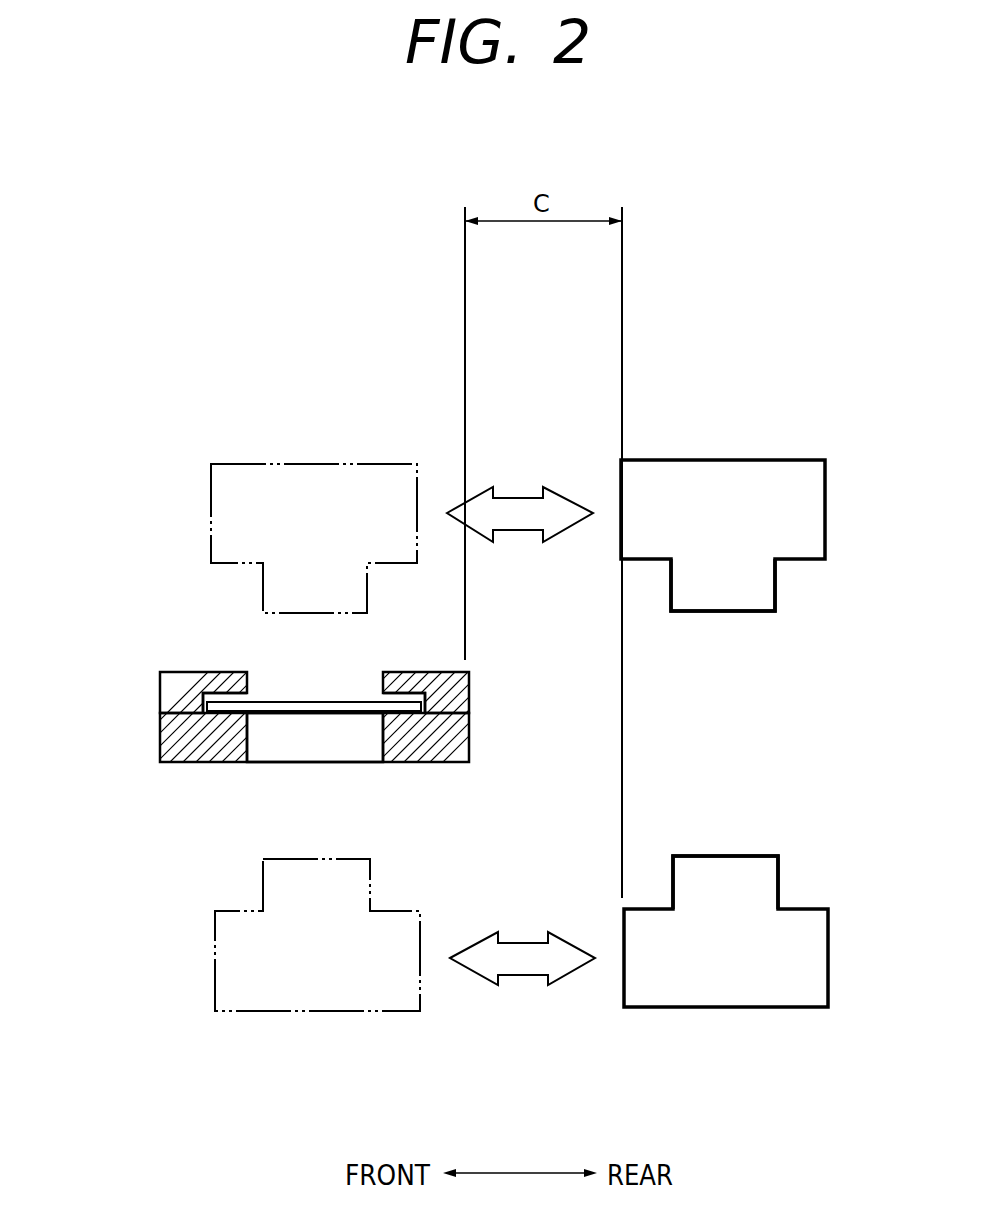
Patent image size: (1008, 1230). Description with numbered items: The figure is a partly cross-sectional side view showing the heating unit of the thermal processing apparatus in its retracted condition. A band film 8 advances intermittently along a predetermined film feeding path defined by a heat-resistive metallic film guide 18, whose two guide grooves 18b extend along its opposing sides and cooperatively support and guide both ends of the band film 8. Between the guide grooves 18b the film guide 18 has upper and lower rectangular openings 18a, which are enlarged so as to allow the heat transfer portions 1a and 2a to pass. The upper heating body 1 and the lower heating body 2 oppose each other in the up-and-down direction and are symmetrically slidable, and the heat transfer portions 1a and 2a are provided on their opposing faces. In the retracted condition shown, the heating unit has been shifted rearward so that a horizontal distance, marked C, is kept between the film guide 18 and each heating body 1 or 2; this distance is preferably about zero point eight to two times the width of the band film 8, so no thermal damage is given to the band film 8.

The upper heating body 1 is at (728, 470).
The heat transfer portion 1a is at (776, 595).
The lower heating body 2 is at (733, 1007).
The heat transfer portion 2a is at (780, 881).
The band film 8 is at (297, 700).
The film guide 18 is at (160, 736).
The rectangular openings 18a is at (340, 680).
The guide grooves 18b is at (203, 700).